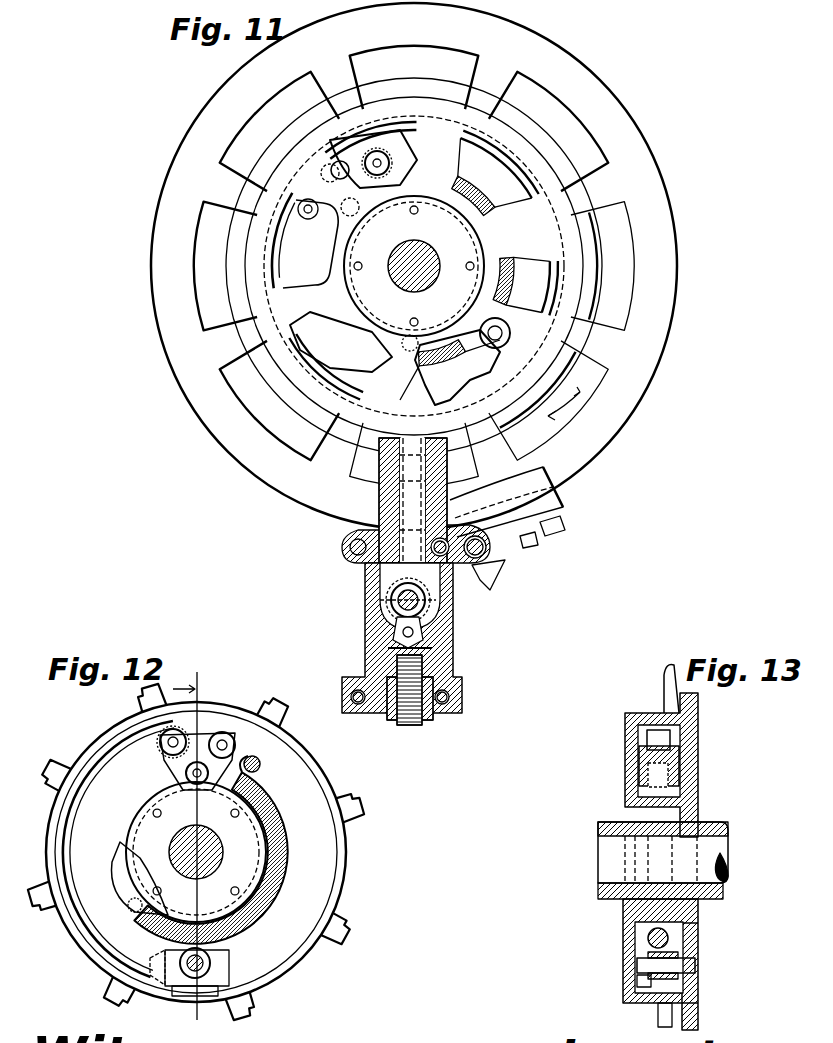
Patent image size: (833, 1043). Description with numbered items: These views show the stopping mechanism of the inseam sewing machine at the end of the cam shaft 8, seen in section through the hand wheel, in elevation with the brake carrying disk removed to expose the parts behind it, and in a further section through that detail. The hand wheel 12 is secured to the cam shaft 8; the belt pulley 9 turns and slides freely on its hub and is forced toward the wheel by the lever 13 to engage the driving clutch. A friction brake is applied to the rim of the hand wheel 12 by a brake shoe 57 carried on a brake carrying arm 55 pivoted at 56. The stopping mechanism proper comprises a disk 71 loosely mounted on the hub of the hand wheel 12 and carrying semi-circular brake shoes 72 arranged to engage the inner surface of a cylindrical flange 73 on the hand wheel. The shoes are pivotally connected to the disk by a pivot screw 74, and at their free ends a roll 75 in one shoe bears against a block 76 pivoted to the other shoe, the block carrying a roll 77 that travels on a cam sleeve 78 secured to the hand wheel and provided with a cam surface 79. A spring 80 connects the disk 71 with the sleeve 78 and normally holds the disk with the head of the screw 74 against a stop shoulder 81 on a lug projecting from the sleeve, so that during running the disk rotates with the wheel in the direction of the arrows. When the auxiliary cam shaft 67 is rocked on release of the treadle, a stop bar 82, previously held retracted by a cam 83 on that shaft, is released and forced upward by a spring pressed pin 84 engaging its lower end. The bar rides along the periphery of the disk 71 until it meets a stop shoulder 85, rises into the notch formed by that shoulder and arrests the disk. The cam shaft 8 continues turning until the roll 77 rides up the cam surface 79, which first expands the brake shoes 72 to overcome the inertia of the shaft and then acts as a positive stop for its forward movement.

In FIG. 11, the cam shaft 8 is at (414, 282).
In FIG. 12, the cam shaft 8 is at (223, 852).
In FIG. 13, the cam shaft 8 is at (712, 848).
In FIG. 11, the belt pulley 9 is at (232, 247).
In FIG. 11, the hand wheel 12 is at (290, 484).
In FIG. 12, the hand wheel 12 is at (352, 930).
In FIG. 13, the hand wheel 12 is at (664, 683).
In FIG. 12, the lever 13 is at (182, 851).
In FIG. 11, the brake carrying arm 55 is at (560, 514).
In FIG. 11, the pivot 56 is at (490, 566).
In FIG. 11, the brake shoe 57 is at (540, 478).
In FIG. 11, the cam shaft 67 is at (392, 600).
In FIG. 11, the disk 71 is at (596, 255).
In FIG. 13, the disk 71 is at (696, 1020).
In FIG. 11, the semi-circular brake shoes 72 is at (513, 167).
In FIG. 12, the semi-circular brake shoes 72 is at (306, 778).
In FIG. 13, the semi-circular brake shoes 72 is at (652, 1006).
In FIG. 11, the cylindrical flange 73 is at (332, 370).
In FIG. 12, the cylindrical flange 73 is at (54, 822).
In FIG. 13, the cylindrical flange 73 is at (643, 722).
In FIG. 11, the pivot screw 74 is at (470, 367).
In FIG. 12, the pivot screw 74 is at (208, 968).
In FIG. 13, the pivot screw 74 is at (640, 965).
In FIG. 11, the roll 75 is at (333, 160).
In FIG. 12, the roll 75 is at (250, 728).
In FIG. 13, the roll 75 is at (662, 738).
In FIG. 11, the block 76 is at (323, 173).
In FIG. 12, the block 76 is at (196, 733).
In FIG. 13, the block 76 is at (640, 753).
In FIG. 11, the roll 77 is at (368, 219).
In FIG. 12, the roll 77 is at (186, 775).
In FIG. 13, the roll 77 is at (652, 776).
In FIG. 11, the cam sleeve 78 is at (345, 248).
In FIG. 12, the cam sleeve 78 is at (128, 832).
In FIG. 11, the cam surface 79 is at (375, 346).
In FIG. 12, the cam surface 79 is at (118, 862).
In FIG. 11, the spring 80 is at (476, 195).
In FIG. 12, the spring 80 is at (284, 846).
In FIG. 13, the spring 80 is at (688, 947).
In FIG. 12, the stop shoulder 81 is at (160, 966).
In FIG. 13, the stop shoulder 81 is at (637, 980).
In FIG. 11, the stop bar 82 is at (408, 513).
In FIG. 11, the cam 83 is at (442, 601).
In FIG. 11, the spring pressed pin 84 is at (392, 650).
In FIG. 11, the stop shoulder 85 is at (478, 428).